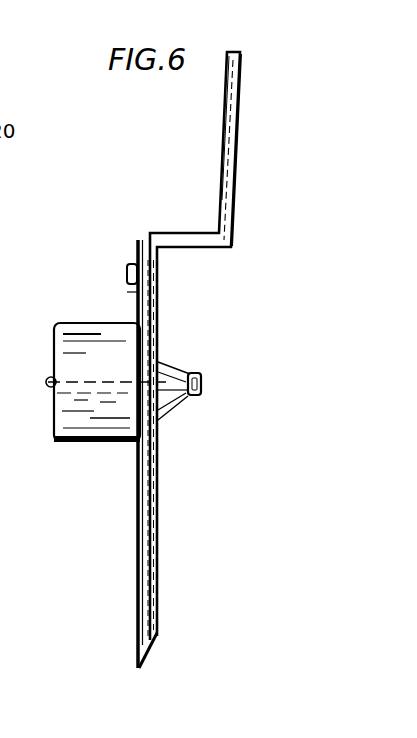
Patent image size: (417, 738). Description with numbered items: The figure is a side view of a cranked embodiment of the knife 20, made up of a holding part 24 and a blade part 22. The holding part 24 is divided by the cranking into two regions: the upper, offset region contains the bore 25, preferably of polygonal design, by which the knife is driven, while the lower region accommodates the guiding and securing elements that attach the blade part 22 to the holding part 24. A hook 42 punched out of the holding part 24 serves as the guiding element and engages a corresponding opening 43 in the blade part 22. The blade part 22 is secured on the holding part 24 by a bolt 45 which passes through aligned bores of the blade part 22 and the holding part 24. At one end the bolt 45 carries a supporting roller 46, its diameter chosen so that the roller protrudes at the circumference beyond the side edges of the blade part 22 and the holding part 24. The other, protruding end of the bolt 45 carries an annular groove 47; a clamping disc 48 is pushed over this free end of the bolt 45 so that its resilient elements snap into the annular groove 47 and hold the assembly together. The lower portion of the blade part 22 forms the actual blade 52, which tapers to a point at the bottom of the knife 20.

The knife 20 is at (331, 191).
The blade part 22 is at (136, 641).
The holding part 24 is at (227, 212).
The bore 25 is at (223, 90).
The hook 42 is at (127, 272).
The opening 43 is at (130, 292).
The bolt 45 is at (66, 412).
The supporting roller 46 is at (63, 377).
The annular groove 47 is at (190, 368).
The clamping disc 48 is at (163, 369).
The blade 52 is at (144, 659).